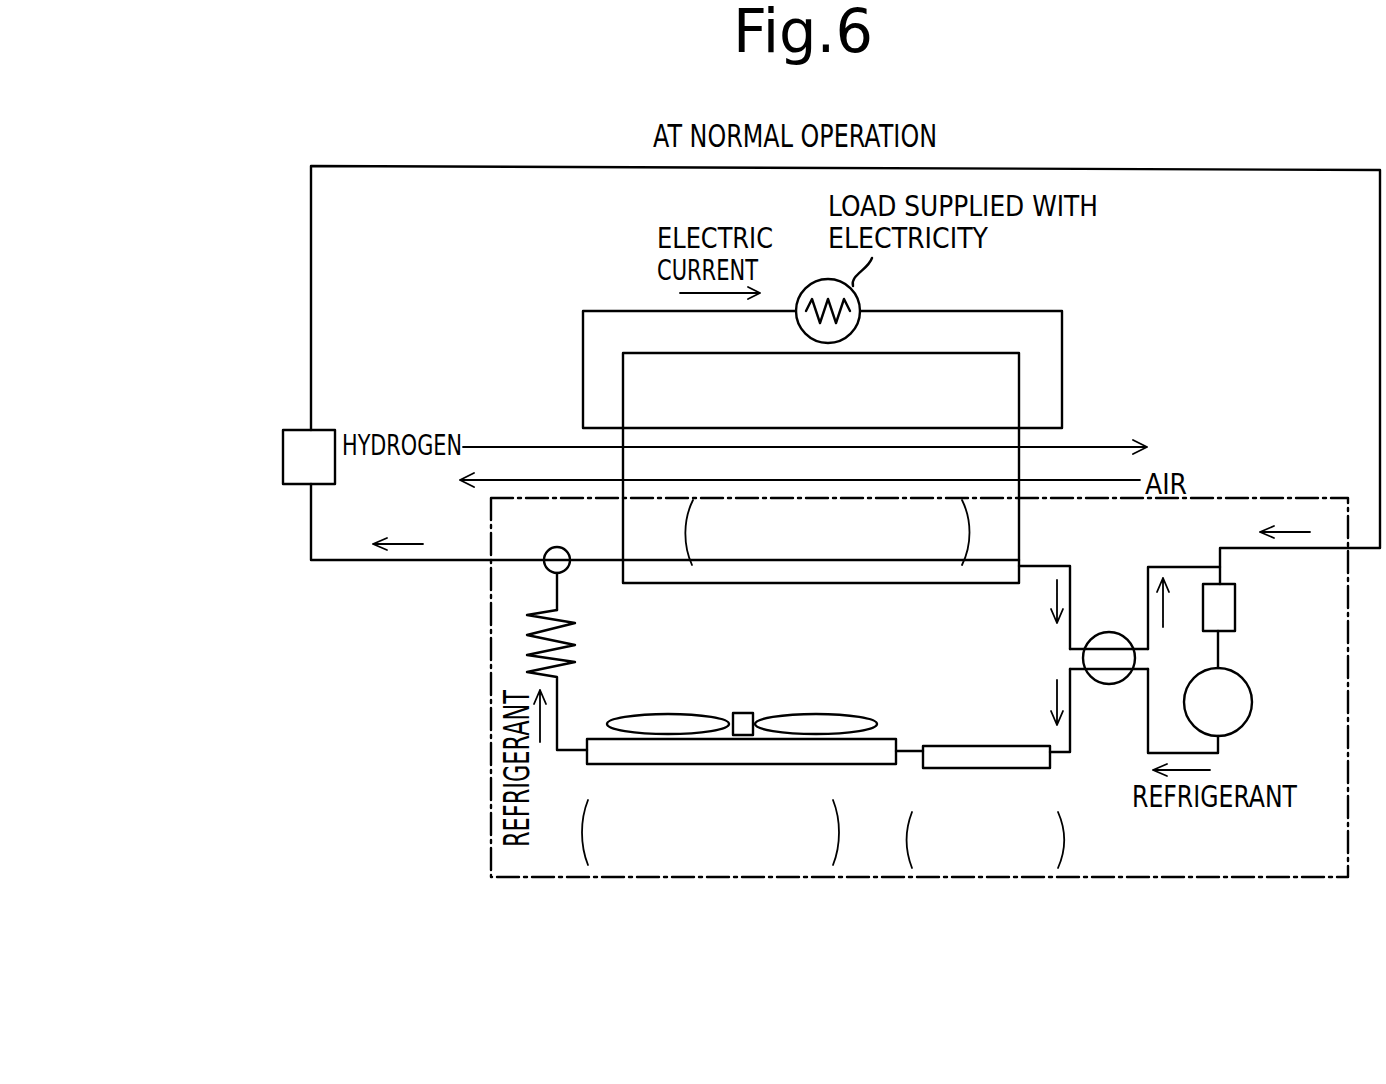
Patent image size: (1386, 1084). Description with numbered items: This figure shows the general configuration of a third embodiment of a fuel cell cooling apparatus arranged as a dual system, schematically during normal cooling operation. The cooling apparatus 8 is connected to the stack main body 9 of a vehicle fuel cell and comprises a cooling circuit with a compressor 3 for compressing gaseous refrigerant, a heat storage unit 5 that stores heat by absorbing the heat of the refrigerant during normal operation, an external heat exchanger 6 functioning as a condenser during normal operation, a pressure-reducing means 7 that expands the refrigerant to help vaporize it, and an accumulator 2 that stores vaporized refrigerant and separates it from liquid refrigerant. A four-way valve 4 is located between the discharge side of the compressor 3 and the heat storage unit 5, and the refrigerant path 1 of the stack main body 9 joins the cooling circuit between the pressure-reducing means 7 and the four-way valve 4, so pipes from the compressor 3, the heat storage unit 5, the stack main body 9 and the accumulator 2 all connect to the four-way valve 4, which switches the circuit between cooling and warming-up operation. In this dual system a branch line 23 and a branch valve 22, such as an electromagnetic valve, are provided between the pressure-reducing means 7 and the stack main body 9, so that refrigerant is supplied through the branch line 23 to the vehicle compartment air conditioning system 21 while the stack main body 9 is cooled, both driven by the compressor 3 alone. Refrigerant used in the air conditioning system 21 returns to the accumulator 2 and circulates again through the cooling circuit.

The refrigerant path 1 is at (821, 530).
The accumulator 2 is at (1236, 602).
The compressor 3 is at (1253, 702).
The four-way valve 4 is at (1107, 685).
The heat storage unit 5 is at (975, 770).
The external heat exchanger 6 is at (700, 764).
The pressure-reducing means 7 is at (568, 641).
The cooling apparatus 8 is at (1270, 484).
The stack main body 9 is at (958, 382).
The air conditioning system 21 is at (283, 464).
The branch valve 22 is at (563, 548).
The branch line 23 is at (417, 562).